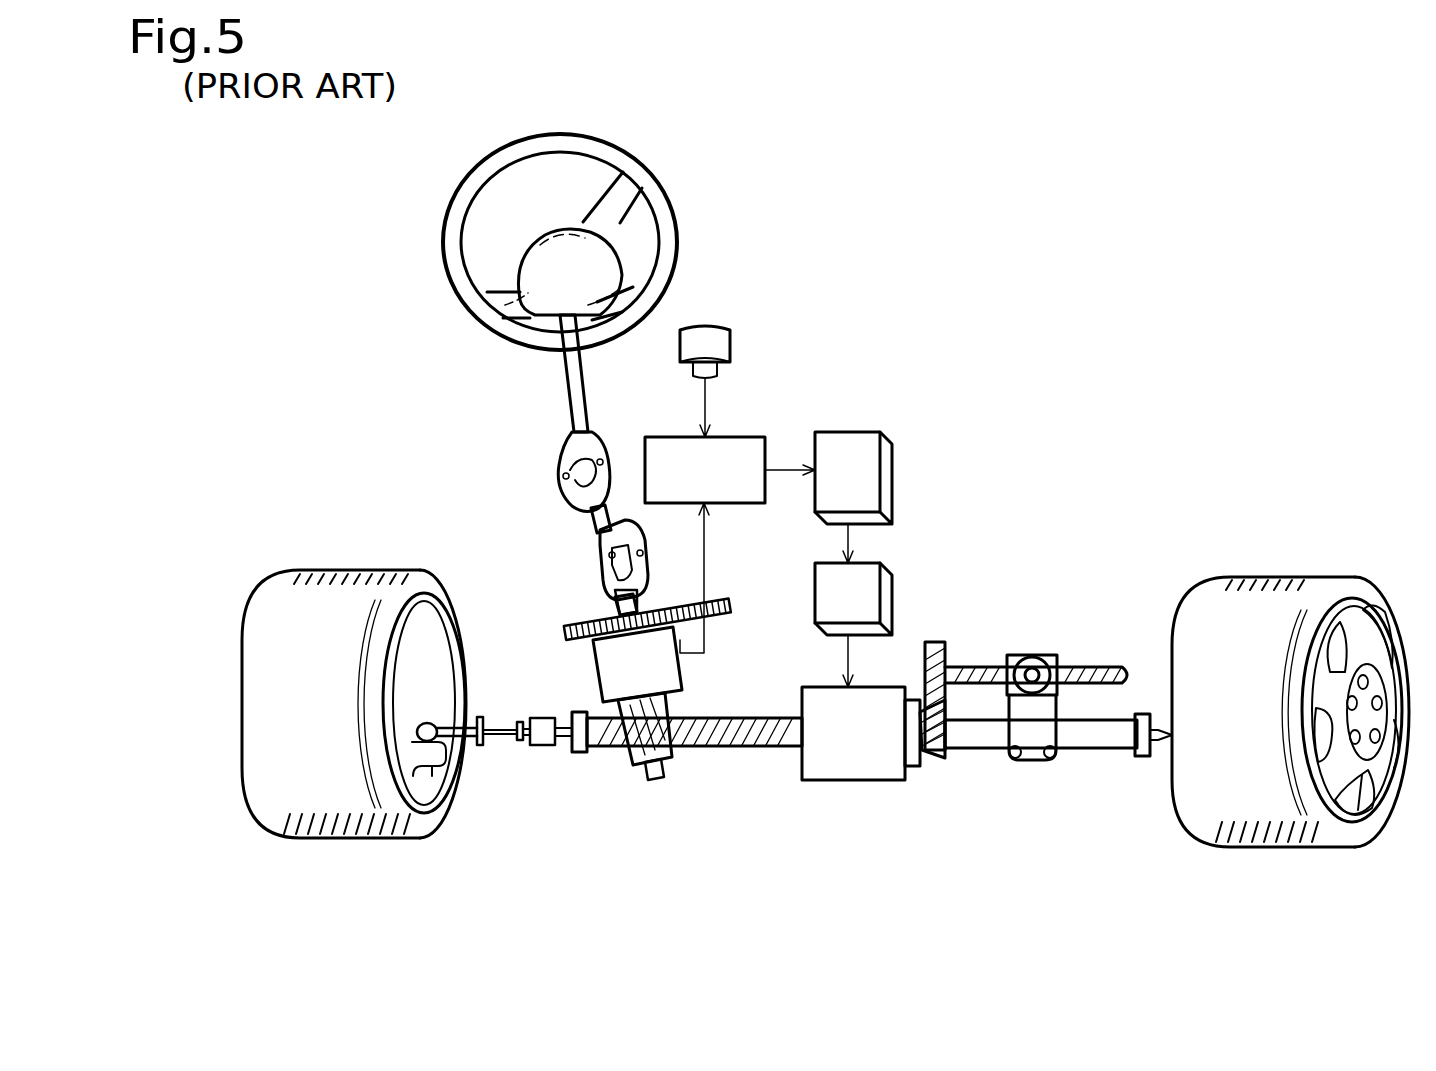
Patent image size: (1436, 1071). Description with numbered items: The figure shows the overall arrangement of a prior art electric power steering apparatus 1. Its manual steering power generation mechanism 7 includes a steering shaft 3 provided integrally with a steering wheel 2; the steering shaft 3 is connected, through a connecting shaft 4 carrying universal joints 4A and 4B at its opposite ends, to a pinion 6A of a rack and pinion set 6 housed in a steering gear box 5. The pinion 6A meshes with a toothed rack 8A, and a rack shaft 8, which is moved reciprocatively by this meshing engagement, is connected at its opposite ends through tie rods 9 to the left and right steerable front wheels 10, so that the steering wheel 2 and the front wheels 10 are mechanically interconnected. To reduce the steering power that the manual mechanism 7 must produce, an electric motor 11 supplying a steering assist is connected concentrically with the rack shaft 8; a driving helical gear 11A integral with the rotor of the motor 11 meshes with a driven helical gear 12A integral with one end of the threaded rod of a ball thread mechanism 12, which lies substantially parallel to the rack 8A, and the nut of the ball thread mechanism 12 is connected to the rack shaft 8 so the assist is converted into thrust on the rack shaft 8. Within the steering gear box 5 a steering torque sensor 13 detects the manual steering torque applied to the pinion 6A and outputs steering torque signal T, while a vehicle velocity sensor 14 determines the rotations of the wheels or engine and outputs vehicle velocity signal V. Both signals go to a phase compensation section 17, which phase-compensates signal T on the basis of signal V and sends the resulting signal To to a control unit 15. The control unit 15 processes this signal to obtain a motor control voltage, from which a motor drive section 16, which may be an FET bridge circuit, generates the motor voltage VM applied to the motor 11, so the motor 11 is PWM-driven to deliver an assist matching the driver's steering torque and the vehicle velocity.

The electric power steering apparatus 1 is at (812, 185).
The steering wheel 2 is at (662, 200).
The steering shaft 3 is at (560, 384).
The connecting shaft 4 is at (615, 513).
The universal joint 4A is at (600, 445).
The universal joint 4B is at (603, 548).
The steering gear box 5 is at (626, 762).
The rack and pinion set 6 is at (606, 753).
The pinion 6A is at (663, 760).
The manual steering power generation mechanism 7 is at (543, 480).
The rack shaft 8 is at (1083, 738).
The toothed rack 8A is at (697, 750).
The tie rod 9 is at (447, 725).
The steerable front wheel 10 is at (328, 570).
The electric motor 11 is at (857, 768).
The driving helical gear 11A is at (934, 746).
The ball thread mechanism 12 is at (1035, 655).
The driven helical gear 12A is at (938, 648).
The steering torque sensor 13 is at (590, 680).
The vehicle velocity sensor 14 is at (718, 330).
The control unit 15 is at (850, 430).
The motor drive section 16 is at (895, 600).
The phase compensation section 17 is at (727, 507).